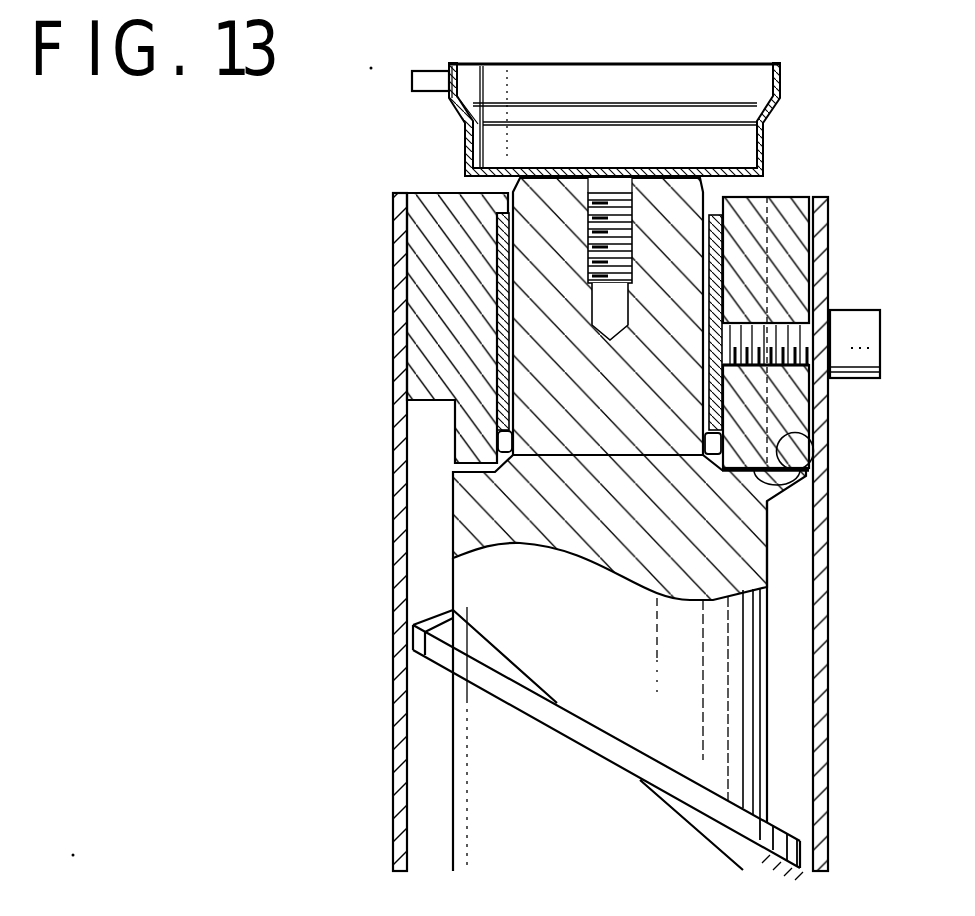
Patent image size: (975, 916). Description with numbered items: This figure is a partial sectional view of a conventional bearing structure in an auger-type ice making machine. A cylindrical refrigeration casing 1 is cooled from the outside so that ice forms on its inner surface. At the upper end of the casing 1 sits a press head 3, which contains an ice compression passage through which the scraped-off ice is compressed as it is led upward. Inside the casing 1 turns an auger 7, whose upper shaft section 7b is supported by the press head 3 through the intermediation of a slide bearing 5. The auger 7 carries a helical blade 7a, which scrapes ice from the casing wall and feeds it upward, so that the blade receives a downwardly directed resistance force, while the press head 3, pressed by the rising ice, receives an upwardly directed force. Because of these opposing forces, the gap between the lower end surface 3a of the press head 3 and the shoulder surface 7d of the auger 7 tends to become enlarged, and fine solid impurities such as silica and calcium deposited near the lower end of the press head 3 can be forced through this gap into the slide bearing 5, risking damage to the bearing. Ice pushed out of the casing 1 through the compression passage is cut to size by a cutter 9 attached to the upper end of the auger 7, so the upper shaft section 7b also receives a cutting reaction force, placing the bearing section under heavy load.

The refrigeration casing 1 is at (828, 525).
The press head 3 is at (792, 287).
The lower end surface 3a is at (822, 426).
The slide bearing 5 is at (723, 248).
The auger 7 is at (738, 680).
The helical blade 7a is at (780, 823).
The upper shaft section 7b is at (538, 287).
The shoulder surface 7d is at (828, 470).
The cutter 9 is at (425, 92).